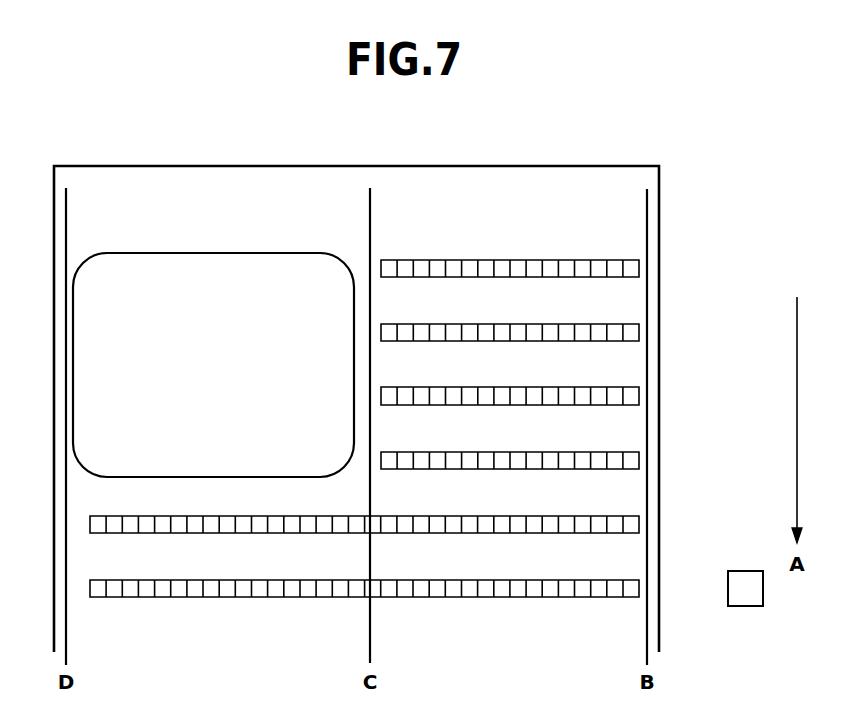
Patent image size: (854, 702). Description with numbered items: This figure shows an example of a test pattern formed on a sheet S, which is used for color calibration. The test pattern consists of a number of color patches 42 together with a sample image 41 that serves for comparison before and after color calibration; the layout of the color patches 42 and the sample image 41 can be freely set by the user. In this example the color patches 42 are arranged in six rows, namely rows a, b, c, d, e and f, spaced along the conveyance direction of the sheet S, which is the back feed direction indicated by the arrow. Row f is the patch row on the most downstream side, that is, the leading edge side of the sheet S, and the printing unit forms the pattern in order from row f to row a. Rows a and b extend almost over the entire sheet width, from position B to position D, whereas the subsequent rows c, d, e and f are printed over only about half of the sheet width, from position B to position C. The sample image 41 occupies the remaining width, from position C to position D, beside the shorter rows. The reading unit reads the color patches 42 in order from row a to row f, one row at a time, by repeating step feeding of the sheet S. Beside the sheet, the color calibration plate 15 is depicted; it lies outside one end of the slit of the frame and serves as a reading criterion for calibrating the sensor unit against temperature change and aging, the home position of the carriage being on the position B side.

The sheet S is at (85, 209).
The sample image 41 is at (84, 366).
The color patches 42 is at (423, 428).
The color calibration plate 15 is at (746, 606).
The row a is at (392, 589).
The row b is at (639, 524).
The row c is at (639, 460).
The row d is at (639, 396).
The row e is at (639, 332).
The row f is at (639, 268).